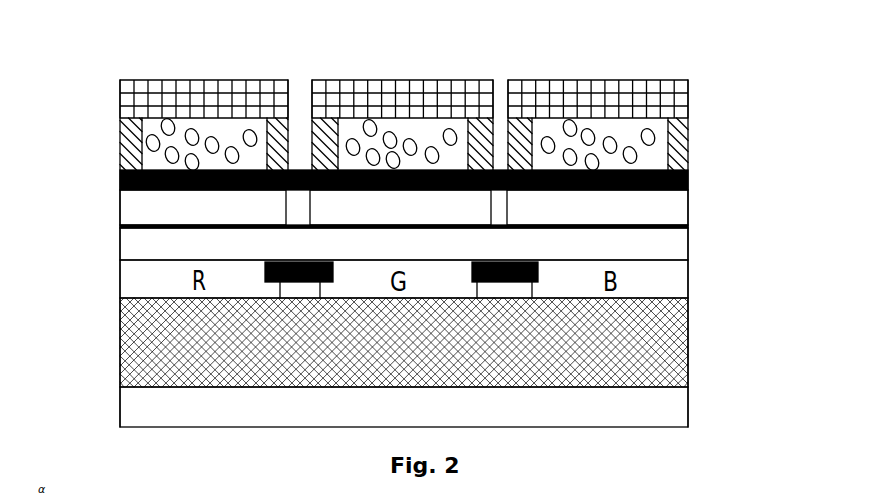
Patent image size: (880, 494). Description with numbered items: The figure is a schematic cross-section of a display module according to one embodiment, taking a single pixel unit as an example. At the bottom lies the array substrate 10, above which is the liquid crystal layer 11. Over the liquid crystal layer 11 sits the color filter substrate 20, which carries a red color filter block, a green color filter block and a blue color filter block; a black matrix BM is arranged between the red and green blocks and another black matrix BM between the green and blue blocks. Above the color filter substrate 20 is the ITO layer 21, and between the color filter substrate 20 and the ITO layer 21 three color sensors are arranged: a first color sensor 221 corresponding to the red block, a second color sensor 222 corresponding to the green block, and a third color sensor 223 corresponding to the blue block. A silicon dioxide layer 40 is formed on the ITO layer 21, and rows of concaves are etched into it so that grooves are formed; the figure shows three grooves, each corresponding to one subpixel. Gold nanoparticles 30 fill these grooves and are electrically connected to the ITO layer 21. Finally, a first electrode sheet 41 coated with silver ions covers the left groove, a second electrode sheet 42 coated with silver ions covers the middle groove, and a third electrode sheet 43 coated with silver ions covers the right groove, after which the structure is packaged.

The array substrate 10 is at (668, 402).
The liquid crystal layer 11 is at (660, 328).
The color filter substrate 20 is at (667, 243).
The ITO layer 21 is at (688, 180).
The gold nanoparticles 30 is at (163, 153).
The silicon dioxide layer 40 is at (680, 143).
The first electrode sheet 41 is at (230, 90).
The second electrode sheet 42 is at (398, 90).
The third electrode sheet 43 is at (592, 90).
The first color sensor 221 is at (123, 203).
The second color sensor 222 is at (477, 213).
The third color sensor 223 is at (677, 210).
The black matrix BM is at (315, 273).